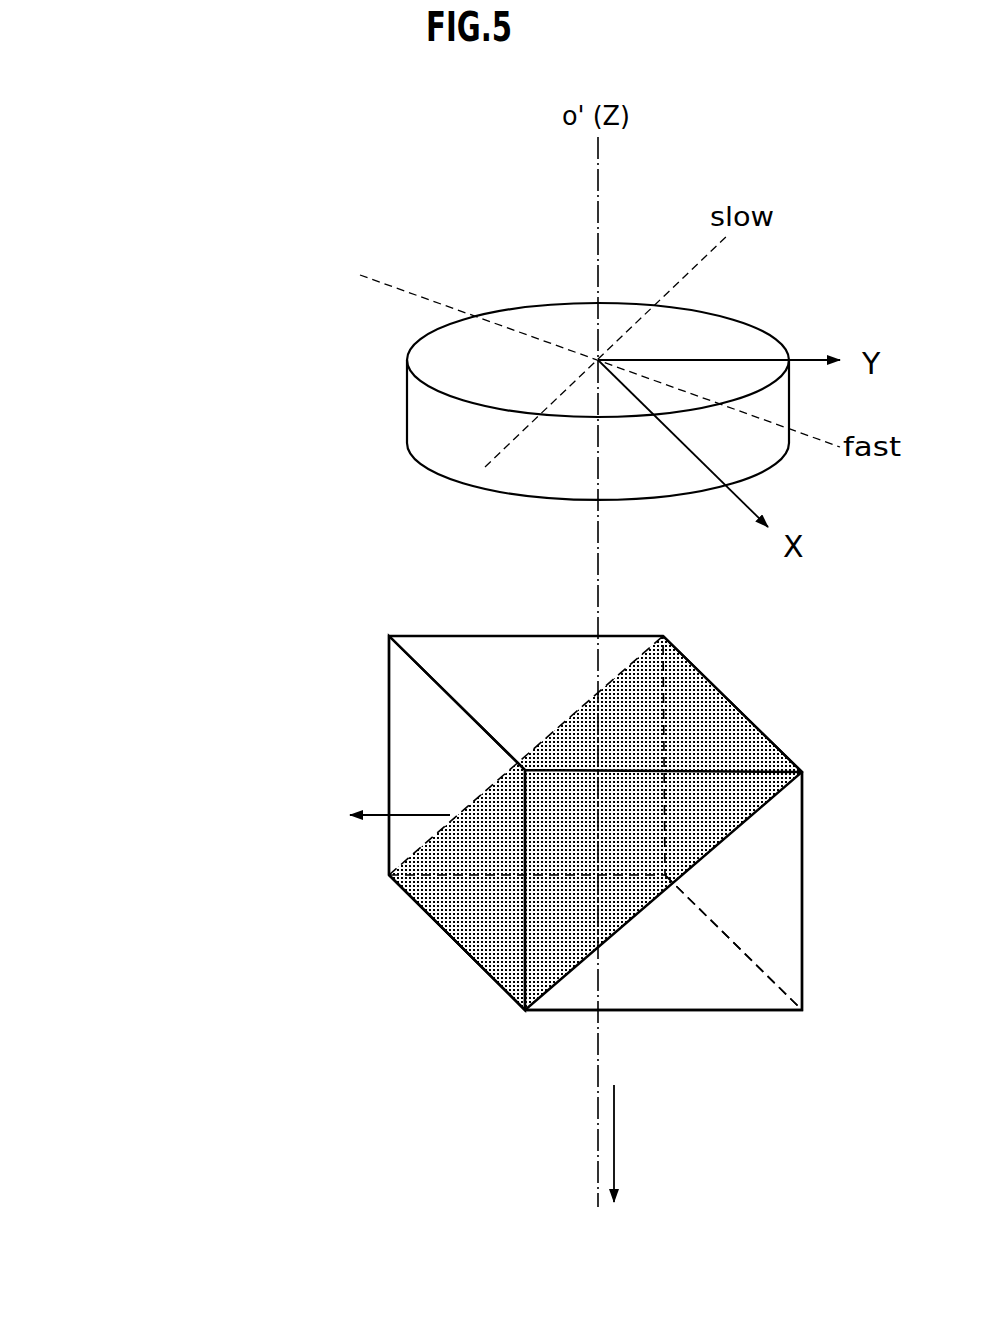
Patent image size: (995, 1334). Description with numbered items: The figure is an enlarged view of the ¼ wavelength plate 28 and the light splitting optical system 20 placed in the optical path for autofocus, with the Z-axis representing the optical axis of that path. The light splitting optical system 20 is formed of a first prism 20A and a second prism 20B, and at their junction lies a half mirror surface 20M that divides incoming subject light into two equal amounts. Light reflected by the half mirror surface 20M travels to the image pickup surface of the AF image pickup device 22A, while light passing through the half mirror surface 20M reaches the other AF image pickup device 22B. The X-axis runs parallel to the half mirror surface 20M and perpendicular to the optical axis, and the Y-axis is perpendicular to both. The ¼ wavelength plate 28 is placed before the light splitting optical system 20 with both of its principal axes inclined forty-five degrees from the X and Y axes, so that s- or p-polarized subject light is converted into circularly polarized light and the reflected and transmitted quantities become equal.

The ¼ wavelength plate 28 is at (407, 430).
The light splitting optical system 20 is at (598, 771).
The first prism 20A is at (395, 707).
The second prism 20B is at (788, 960).
The half mirror surface 20M is at (692, 738).
The AF image pickup device 22A is at (262, 801).
The AF image pickup device 22B is at (637, 1179).